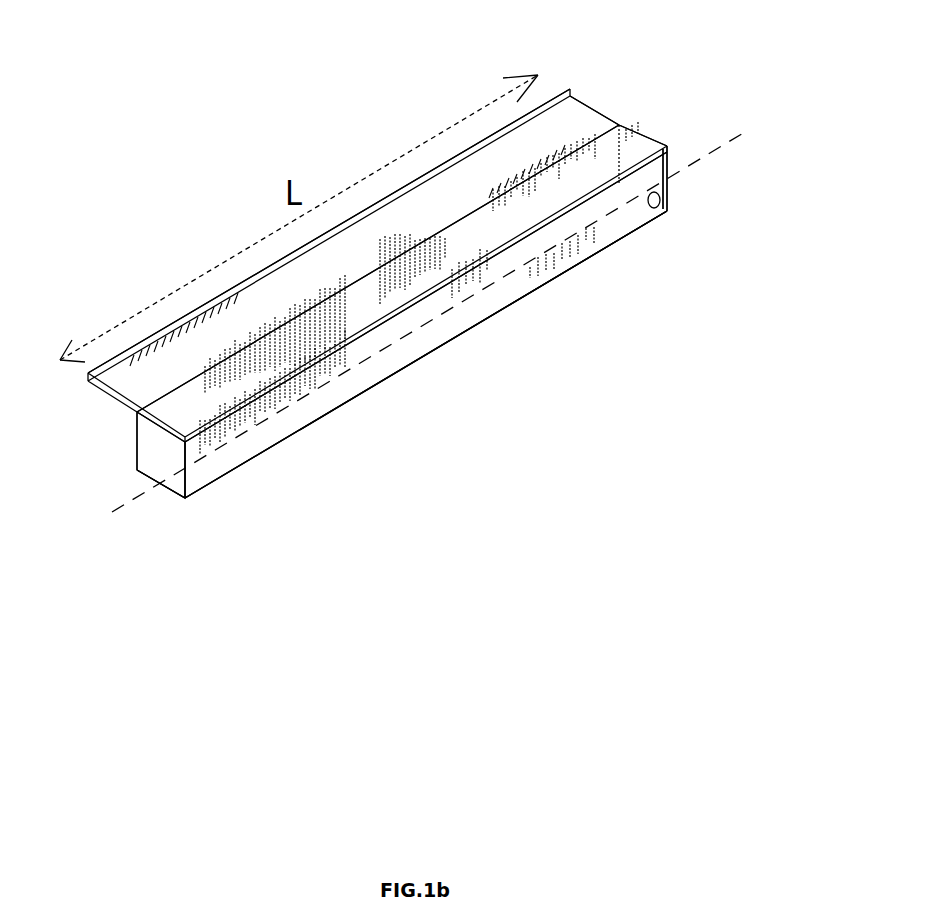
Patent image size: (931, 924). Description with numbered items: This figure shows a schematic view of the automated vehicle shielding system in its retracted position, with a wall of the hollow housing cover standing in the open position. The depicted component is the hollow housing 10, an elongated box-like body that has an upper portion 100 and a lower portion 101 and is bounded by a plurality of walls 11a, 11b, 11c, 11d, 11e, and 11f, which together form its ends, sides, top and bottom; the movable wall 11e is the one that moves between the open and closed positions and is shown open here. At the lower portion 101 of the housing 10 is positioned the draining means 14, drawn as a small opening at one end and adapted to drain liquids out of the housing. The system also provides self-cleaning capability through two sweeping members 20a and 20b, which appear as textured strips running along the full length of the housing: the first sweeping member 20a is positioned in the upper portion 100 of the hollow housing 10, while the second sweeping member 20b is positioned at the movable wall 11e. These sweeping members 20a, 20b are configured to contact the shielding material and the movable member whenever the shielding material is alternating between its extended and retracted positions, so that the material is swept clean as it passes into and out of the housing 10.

The hollow housing 10 is at (605, 275).
The wall 11a is at (243, 443).
The wall 11b is at (137, 445).
The wall 11c is at (172, 466).
The wall 11d is at (668, 180).
The movable wall 11e is at (455, 192).
The wall 11f is at (365, 395).
The draining means 14 is at (658, 208).
The sweeping member 20a is at (258, 395).
The sweeping member 20b is at (540, 105).
The upper portion 100 is at (665, 168).
The lower portion 101 is at (497, 300).